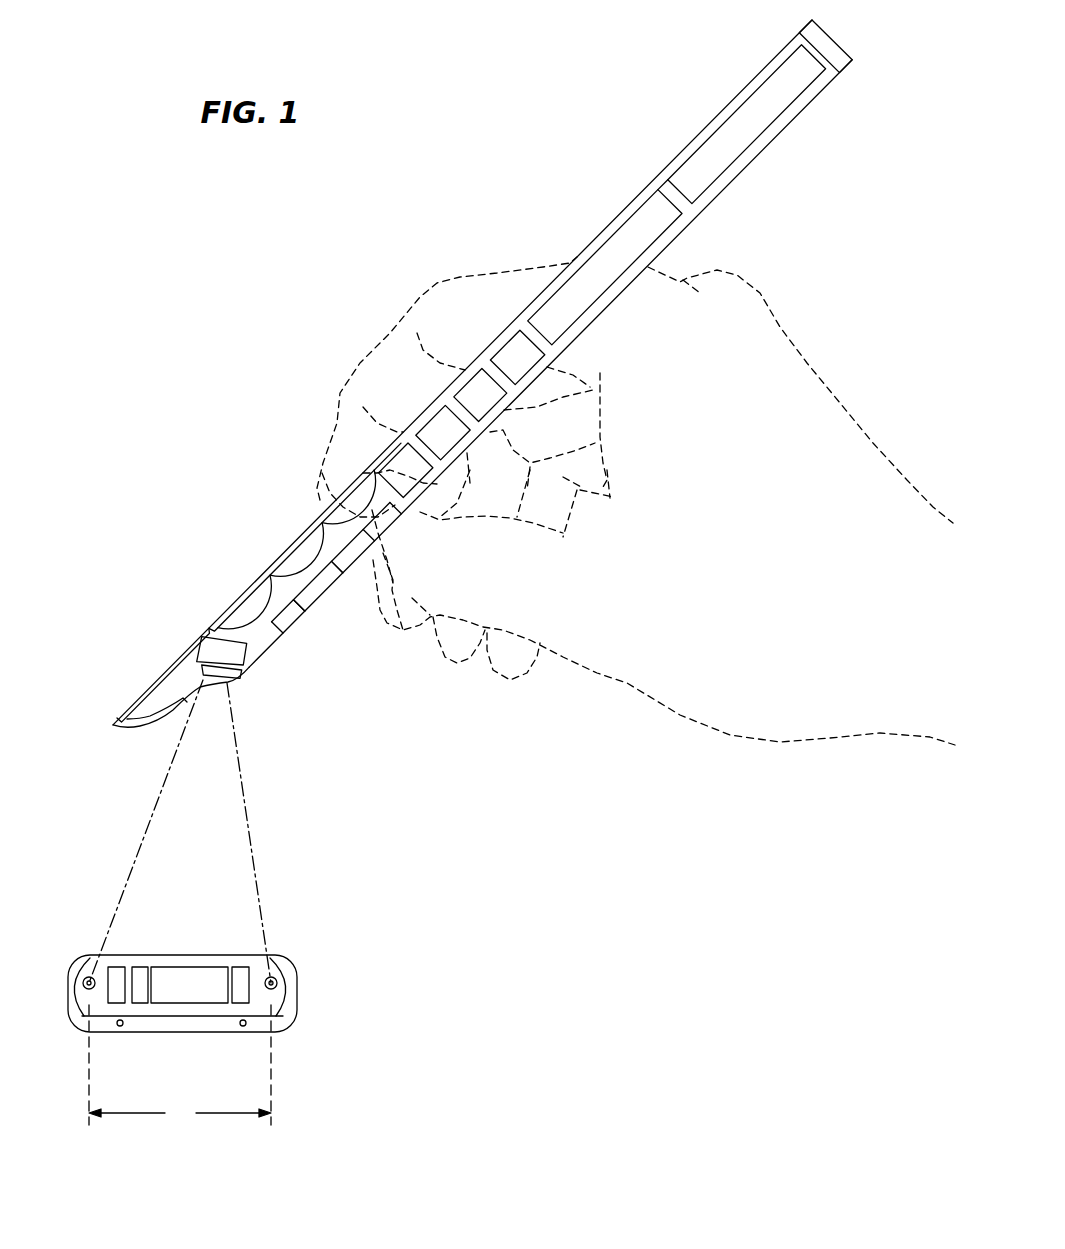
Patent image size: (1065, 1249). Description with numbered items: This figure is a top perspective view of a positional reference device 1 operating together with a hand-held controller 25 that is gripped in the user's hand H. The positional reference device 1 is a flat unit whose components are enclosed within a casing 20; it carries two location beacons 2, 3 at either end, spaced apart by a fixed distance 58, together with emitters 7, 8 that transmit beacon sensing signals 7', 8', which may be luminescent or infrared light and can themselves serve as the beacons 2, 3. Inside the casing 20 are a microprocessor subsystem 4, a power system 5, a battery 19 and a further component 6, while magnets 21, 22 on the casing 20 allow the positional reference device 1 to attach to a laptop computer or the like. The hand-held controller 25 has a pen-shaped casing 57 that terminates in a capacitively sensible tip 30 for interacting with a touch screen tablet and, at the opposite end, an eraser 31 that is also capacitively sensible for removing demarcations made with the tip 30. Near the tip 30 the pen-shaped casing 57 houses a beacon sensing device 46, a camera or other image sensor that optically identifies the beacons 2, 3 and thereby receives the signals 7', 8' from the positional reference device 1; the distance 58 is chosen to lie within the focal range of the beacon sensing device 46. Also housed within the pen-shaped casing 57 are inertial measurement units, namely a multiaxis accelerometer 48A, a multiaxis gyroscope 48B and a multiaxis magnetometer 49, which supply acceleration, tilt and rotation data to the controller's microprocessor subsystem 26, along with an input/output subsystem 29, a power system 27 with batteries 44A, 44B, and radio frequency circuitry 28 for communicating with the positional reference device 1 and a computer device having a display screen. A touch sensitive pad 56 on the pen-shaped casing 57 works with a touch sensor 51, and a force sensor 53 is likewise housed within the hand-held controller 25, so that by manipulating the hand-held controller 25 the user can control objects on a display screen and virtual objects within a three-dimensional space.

The positional reference device 1 is at (72, 946).
The location beacon 2 is at (83, 982).
The location beacon 3 is at (277, 982).
The microprocessor subsystem 4 is at (115, 967).
The power system 5 is at (142, 967).
The display 6 is at (192, 967).
The emitter 7 is at (68, 995).
The emitter 8 is at (294, 995).
The beacon sensing signal 7' is at (146, 831).
The beacon sensing signal 8' is at (263, 833).
The battery 19 is at (241, 967).
The casing 20 is at (283, 950).
The magnet 21 is at (121, 1027).
The magnet 22 is at (243, 1027).
The hand-held controller 25 is at (560, 196).
The microprocessor subsystem 26 is at (477, 385).
The power system 27 is at (523, 365).
The radio frequency circuitry 28 is at (452, 442).
The input/output subsystem 29 is at (413, 498).
The capacitively sensible tip 30 is at (113, 727).
The eraser 31 is at (845, 64).
The battery 44A is at (620, 283).
The battery 44B is at (763, 137).
The beacon sensing device 46 is at (243, 665).
The multiaxis accelerometer 48A is at (317, 592).
The multiaxis gyroscope 48B is at (347, 565).
The multiaxis magnetometer 49 is at (277, 630).
The touch sensor 51 is at (242, 602).
The force sensor 53 is at (148, 690).
The touch sensitive pad 56 is at (330, 517).
The pen-shaped casing 57 is at (655, 178).
The distance 58 is at (180, 1065).
The hand H is at (738, 582).